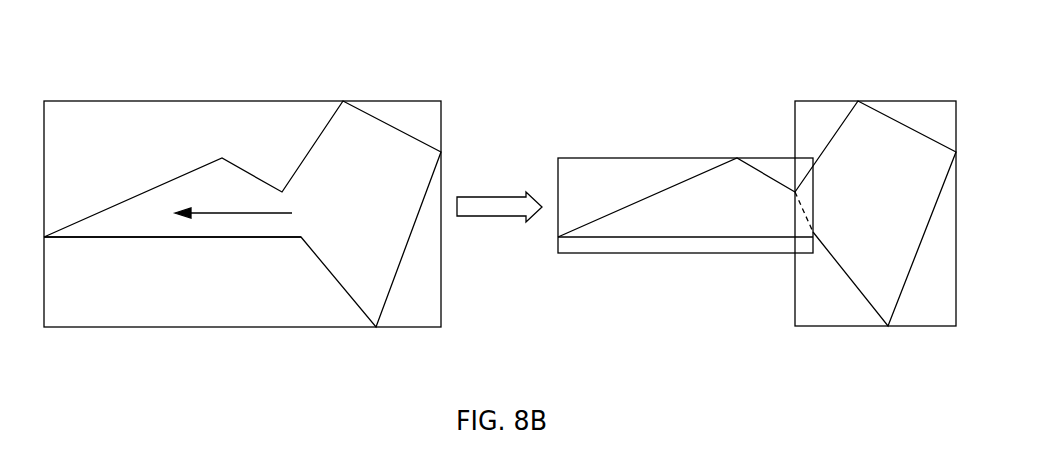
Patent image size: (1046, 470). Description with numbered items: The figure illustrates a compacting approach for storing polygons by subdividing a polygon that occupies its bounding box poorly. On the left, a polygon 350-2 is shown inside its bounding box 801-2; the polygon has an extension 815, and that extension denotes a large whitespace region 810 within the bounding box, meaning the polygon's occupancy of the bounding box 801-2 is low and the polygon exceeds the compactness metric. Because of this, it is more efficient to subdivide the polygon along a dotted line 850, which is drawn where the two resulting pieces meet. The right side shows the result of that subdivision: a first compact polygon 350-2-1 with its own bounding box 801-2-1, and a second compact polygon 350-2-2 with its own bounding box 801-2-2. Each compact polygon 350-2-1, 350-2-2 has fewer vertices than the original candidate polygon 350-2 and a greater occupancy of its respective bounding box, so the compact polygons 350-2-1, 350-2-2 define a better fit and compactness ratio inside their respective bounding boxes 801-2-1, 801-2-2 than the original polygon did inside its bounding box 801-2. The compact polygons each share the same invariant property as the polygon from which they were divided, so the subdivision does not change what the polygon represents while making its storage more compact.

The bounding box 801-2 is at (140, 100).
The polygon 350-2 is at (140, 195).
The whitespace region 810 is at (214, 297).
The extension 815 is at (278, 212).
The bounding box 801-2-1 is at (623, 253).
The compact polygon 350-2-1 is at (647, 193).
The bounding box 801-2-2 is at (823, 326).
The compact polygon 350-2-2 is at (878, 112).
The dotted line 850 is at (815, 213).